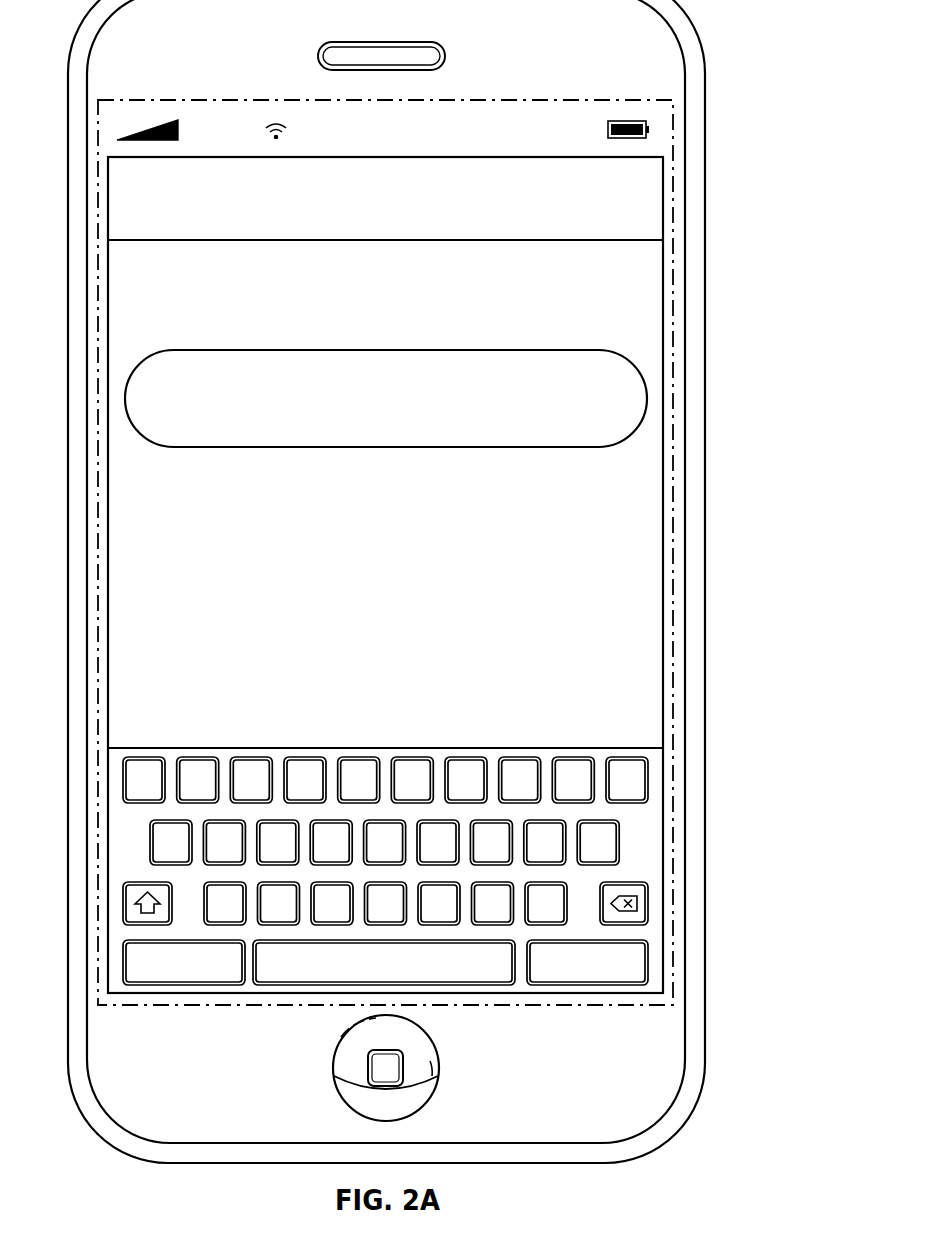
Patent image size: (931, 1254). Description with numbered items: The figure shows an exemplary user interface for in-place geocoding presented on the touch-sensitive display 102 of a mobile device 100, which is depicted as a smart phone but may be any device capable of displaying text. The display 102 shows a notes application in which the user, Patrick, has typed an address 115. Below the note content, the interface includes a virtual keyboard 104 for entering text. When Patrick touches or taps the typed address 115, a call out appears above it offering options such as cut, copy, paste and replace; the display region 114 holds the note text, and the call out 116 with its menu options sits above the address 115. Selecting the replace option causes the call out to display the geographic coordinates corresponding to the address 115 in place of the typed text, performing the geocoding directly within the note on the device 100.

The mobile device 100 is at (705, 175).
The touch-sensitive display 102 is at (513, 100).
The virtual keyboard 104 is at (650, 838).
The text editing area 114 is at (663, 702).
The address 115 is at (462, 500).
The edit menu 116 is at (647, 398).